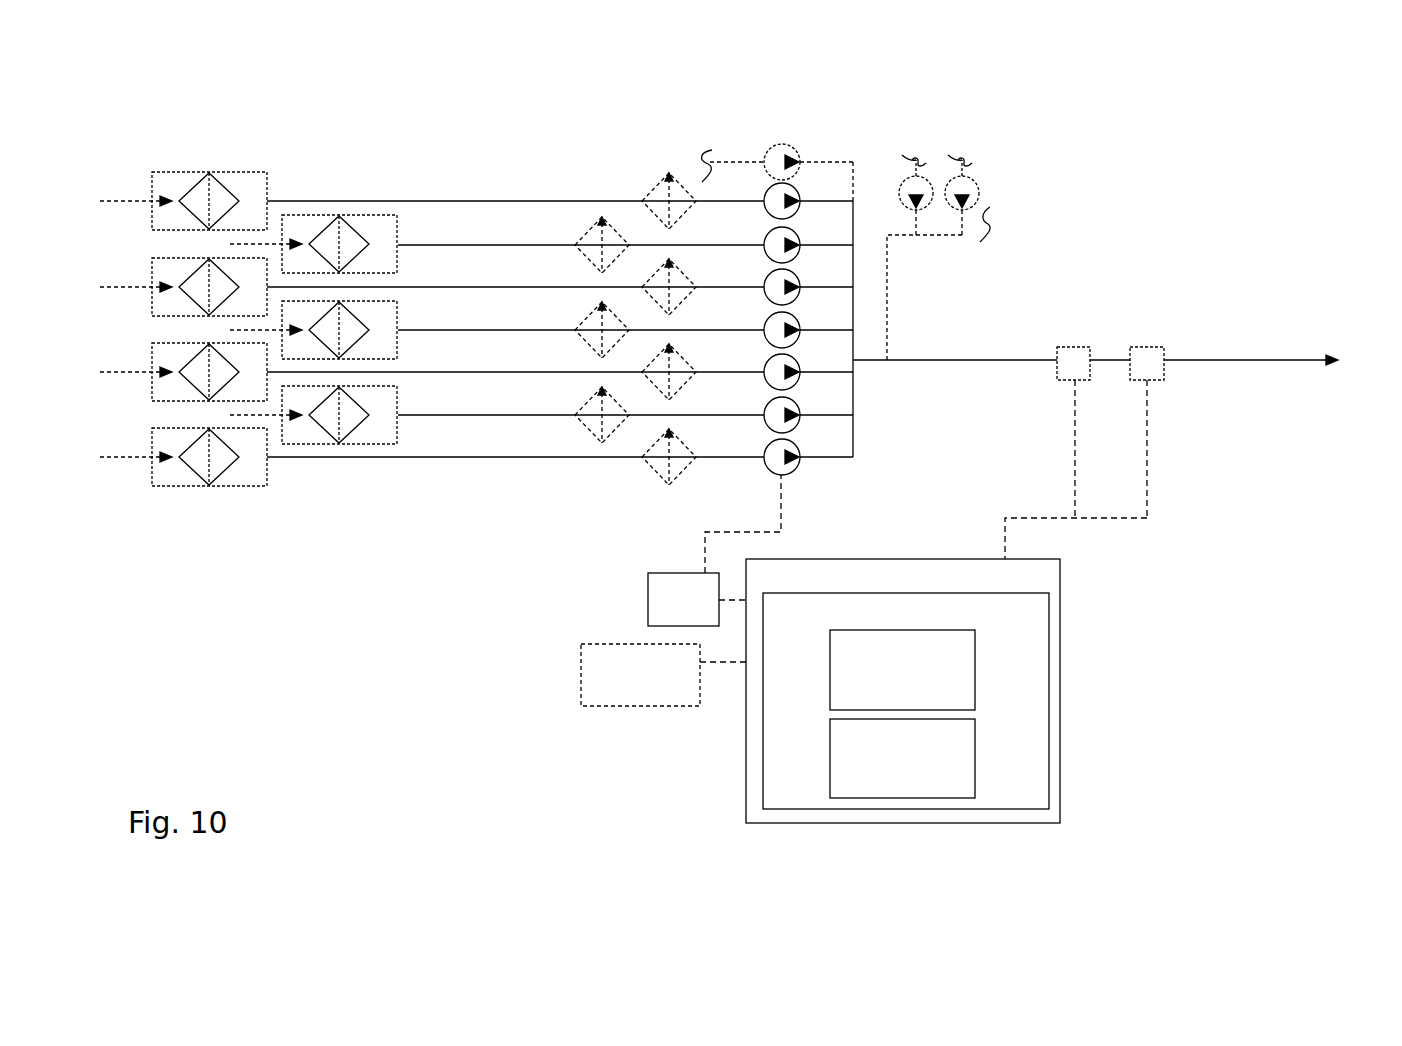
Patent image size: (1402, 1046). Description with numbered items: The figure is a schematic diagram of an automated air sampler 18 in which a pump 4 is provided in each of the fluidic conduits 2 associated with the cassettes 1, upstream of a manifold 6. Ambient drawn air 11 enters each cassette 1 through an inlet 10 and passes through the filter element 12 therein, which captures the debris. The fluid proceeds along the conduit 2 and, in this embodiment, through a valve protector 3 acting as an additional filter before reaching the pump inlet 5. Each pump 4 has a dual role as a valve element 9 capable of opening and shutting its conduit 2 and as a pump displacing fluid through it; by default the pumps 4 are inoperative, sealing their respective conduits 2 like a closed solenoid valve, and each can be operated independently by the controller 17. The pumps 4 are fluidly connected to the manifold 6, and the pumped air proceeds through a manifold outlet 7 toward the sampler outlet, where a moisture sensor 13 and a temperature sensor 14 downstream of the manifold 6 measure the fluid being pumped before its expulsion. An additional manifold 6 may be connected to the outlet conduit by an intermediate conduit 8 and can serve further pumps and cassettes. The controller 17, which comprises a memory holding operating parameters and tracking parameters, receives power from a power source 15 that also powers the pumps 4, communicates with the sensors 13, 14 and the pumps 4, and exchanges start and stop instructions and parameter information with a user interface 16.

The cassette 1 is at (258, 190).
The conduit 2 is at (460, 413).
The valve protector 3 is at (657, 462).
The pump 4 is at (782, 460).
The pump inlet 5 is at (766, 200).
The manifold 6 is at (855, 410).
The manifold outlet 7 is at (865, 362).
The intermediate conduit 8 is at (887, 325).
The valve element 9 is at (800, 462).
The inlet 10 is at (152, 360).
The drawn air 11 is at (140, 458).
The filter element 12 is at (228, 460).
The moisture sensor 13 is at (1068, 365).
The temperature sensor 14 is at (1152, 362).
The power source 15 is at (657, 598).
The user interface 16 is at (663, 675).
The controller 17 is at (903, 691).
The automated air sampler 18 is at (1110, 180).